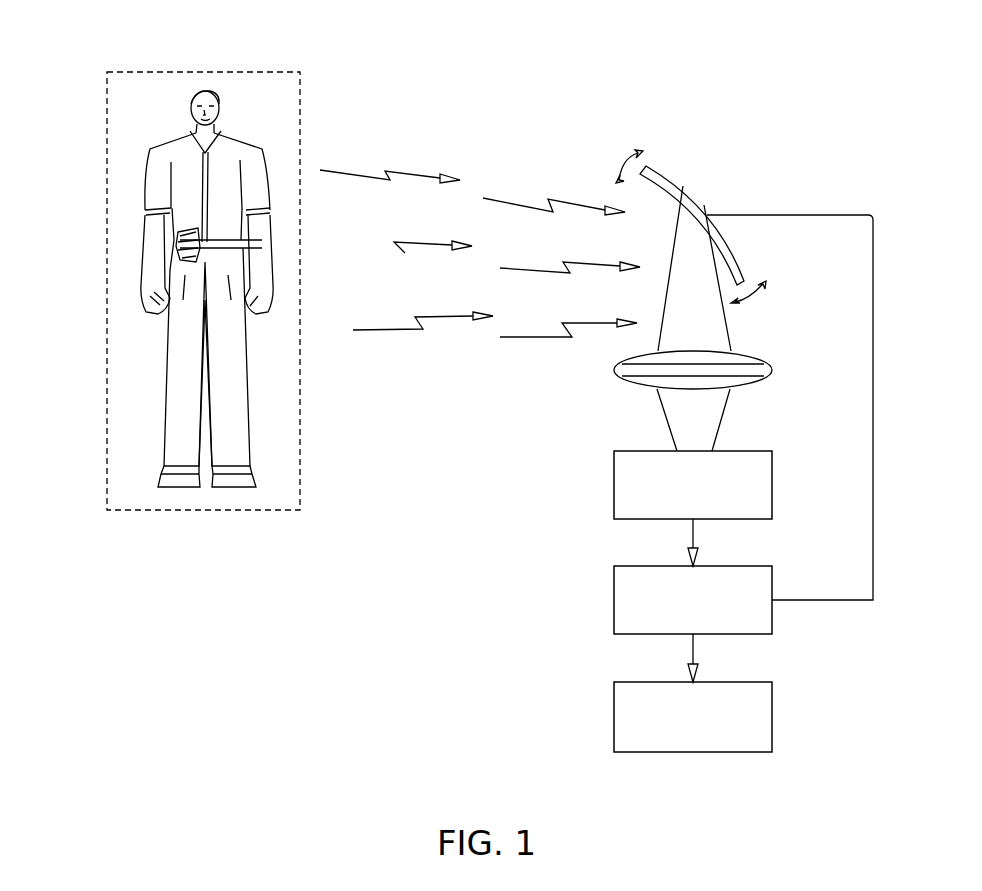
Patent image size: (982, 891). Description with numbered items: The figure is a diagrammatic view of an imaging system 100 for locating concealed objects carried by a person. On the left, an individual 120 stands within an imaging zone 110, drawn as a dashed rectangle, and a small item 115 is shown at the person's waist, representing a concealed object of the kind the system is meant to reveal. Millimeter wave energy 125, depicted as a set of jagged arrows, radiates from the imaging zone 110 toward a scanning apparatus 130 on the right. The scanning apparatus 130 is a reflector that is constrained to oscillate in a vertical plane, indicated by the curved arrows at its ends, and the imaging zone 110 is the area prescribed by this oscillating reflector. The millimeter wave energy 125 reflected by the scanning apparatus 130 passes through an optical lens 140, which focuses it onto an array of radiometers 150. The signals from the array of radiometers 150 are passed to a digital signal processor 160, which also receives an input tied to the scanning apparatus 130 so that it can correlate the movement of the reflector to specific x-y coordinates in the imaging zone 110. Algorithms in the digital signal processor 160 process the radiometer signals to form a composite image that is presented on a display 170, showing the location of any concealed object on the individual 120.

The imaging system 100 is at (548, 78).
The imaging zone 110 is at (107, 172).
The concealed object 115 is at (180, 238).
The individual 120 is at (206, 90).
The millimeter wave energy 125 is at (355, 174).
The scanning apparatus 130 is at (678, 85).
The optical lens 140 is at (622, 386).
The array of radiometers 150 is at (614, 488).
The digital signal processor 160 is at (614, 601).
The display 170 is at (614, 722).